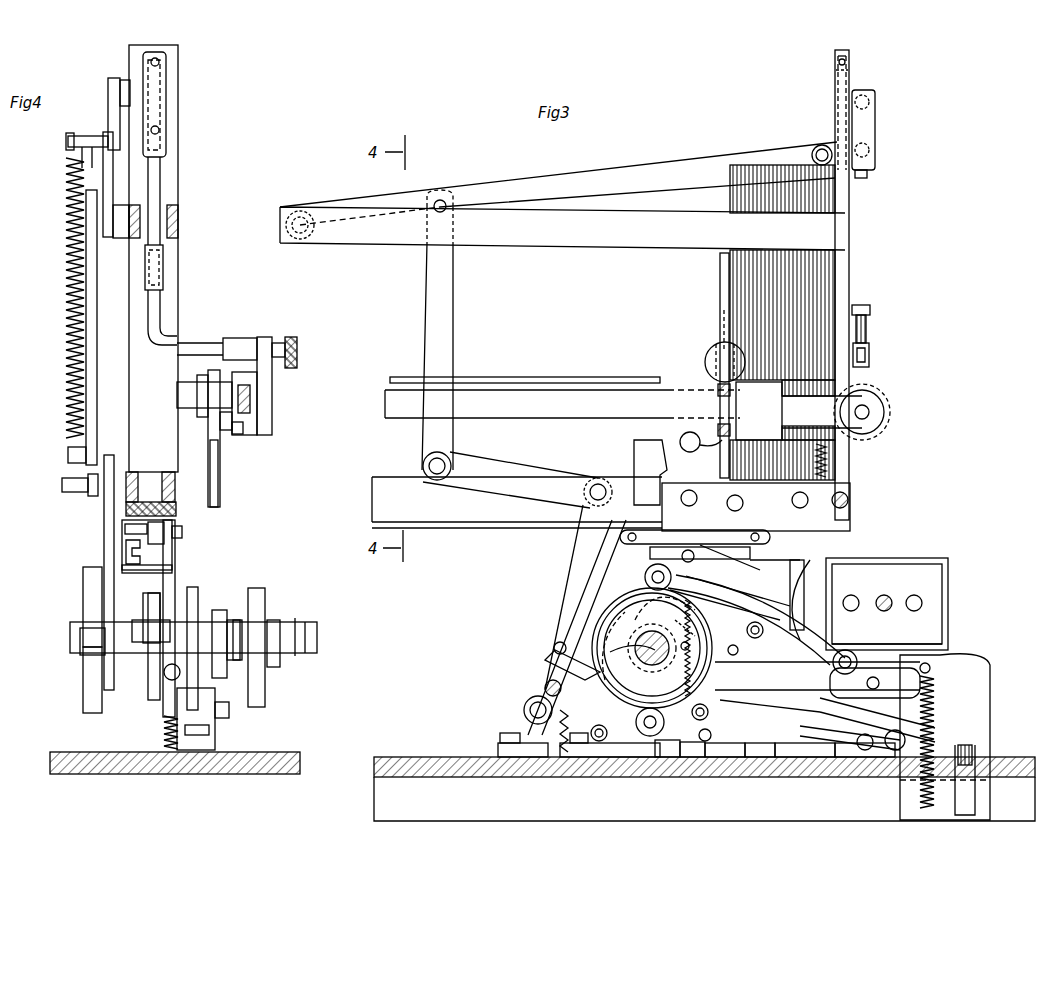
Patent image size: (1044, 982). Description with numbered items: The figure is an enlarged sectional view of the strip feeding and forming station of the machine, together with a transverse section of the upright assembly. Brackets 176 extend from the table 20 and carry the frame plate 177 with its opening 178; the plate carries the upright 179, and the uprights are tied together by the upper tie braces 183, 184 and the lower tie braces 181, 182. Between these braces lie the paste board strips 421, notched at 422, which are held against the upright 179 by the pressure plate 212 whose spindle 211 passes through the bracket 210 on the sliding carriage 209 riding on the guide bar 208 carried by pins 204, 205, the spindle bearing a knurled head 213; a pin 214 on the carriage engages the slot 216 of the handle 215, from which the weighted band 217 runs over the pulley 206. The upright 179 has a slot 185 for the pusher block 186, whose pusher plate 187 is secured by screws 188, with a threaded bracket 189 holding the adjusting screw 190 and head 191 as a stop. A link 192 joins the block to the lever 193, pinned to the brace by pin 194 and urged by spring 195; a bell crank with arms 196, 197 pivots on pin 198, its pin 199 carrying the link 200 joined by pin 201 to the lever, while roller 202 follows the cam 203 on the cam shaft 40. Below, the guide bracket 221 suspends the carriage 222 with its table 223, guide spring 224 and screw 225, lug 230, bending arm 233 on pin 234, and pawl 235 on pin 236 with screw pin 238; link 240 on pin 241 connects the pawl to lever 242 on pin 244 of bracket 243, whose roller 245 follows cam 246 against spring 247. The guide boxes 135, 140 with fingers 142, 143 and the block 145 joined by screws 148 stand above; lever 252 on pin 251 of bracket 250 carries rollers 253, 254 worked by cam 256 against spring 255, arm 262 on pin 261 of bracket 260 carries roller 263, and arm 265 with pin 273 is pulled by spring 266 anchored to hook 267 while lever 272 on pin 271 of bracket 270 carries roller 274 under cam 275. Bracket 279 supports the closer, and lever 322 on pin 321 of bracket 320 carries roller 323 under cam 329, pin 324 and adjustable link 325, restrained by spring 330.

In FIG. 4, the table 20 is at (288, 752).
In FIG. 3, the table 20 is at (395, 757).
In FIG. 4, the cam shaft 40 is at (317, 636).
In FIG. 3, the cam shaft 40 is at (652, 642).
In FIG. 3, the outer guide box 135 is at (948, 630).
In FIG. 3, the inner guide box 140 is at (948, 579).
In FIG. 3, the finger 142 is at (826, 588).
In FIG. 3, the finger 143 is at (850, 594).
In FIG. 3, the block 145 is at (890, 588).
In FIG. 3, the screws 148 is at (922, 600).
In FIG. 3, the bracket 176 is at (814, 762).
In FIG. 3, the frame plate 177 is at (494, 523).
In FIG. 3, the opening 178 is at (850, 516).
In FIG. 4, the upright 179 is at (180, 160).
In FIG. 3, the upright 179 is at (850, 272).
In FIG. 4, the lower tie brace 181 is at (183, 487).
In FIG. 3, the lower tie brace 181 is at (517, 499).
In FIG. 4, the lower tie brace 182 is at (151, 494).
In FIG. 4, the upper tie brace 183 is at (179, 221).
In FIG. 3, the upper tie brace 183 is at (590, 250).
In FIG. 4, the upper tie brace 184 is at (134, 240).
In FIG. 4, the slot 185 is at (161, 186).
In FIG. 3, the pusher block 186 is at (875, 115).
In FIG. 4, the pusher plate 187 is at (166, 101).
In FIG. 3, the pusher plate 187 is at (835, 92).
In FIG. 4, the screws 188 is at (159, 62).
In FIG. 3, the screws 188 is at (850, 68).
In FIG. 3, the threaded bracket 189 is at (869, 350).
In FIG. 3, the adjusting screw 190 is at (866, 322).
In FIG. 3, the head 191 is at (870, 308).
In FIG. 4, the link 192 is at (108, 112).
In FIG. 3, the link 192 is at (875, 140).
In FIG. 4, the lever 193 is at (108, 176).
In FIG. 3, the lever 193 is at (558, 174).
In FIG. 4, the pin 194 is at (120, 212).
In FIG. 3, the pin 194 is at (298, 216).
In FIG. 4, the spring 195 is at (66, 328).
In FIG. 3, the spring 195 is at (830, 470).
In FIG. 3, the bell crank arm 196 is at (556, 472).
In FIG. 4, the bell crank arm 197 is at (104, 514).
In FIG. 3, the bell crank arm 197 is at (575, 540).
In FIG. 4, the pin 198 is at (62, 486).
In FIG. 3, the pin 198 is at (602, 478).
In FIG. 4, the pin 199 is at (68, 456).
In FIG. 3, the pin 199 is at (446, 460).
In FIG. 4, the link 200 is at (92, 392).
In FIG. 3, the link 200 is at (454, 344).
In FIG. 4, the pin 201 is at (75, 190).
In FIG. 3, the pin 201 is at (441, 198).
In FIG. 4, the roller 202 is at (90, 636).
In FIG. 3, the roller 202 is at (548, 652).
In FIG. 4, the cam 203 is at (84, 682).
In FIG. 3, the cam 203 is at (650, 603).
In FIG. 4, the pin 204 is at (186, 410).
In FIG. 3, the pin 204 is at (870, 412).
In FIG. 4, the pin 205 is at (157, 630).
In FIG. 3, the pulley 206 is at (880, 428).
In FIG. 4, the guide bar 208 is at (250, 410).
In FIG. 3, the guide bar 208 is at (562, 404).
In FIG. 4, the sliding carriage 209 is at (240, 435).
In FIG. 3, the sliding carriage 209 is at (680, 377).
In FIG. 4, the bracket 210 is at (271, 400).
In FIG. 3, the bracket 210 is at (737, 406).
In FIG. 4, the spindle 211 is at (222, 338).
In FIG. 3, the spindle 211 is at (716, 355).
In FIG. 4, the pressure plate 212 is at (161, 302).
In FIG. 3, the pressure plate 212 is at (720, 295).
In FIG. 4, the knurled head 213 is at (297, 342).
In FIG. 3, the knurled head 213 is at (722, 384).
In FIG. 4, the pin 214 is at (234, 434).
In FIG. 3, the pin 214 is at (688, 452).
In FIG. 4, the handle 215 is at (220, 490).
In FIG. 3, the handle 215 is at (651, 472).
In FIG. 3, the slot 216 is at (706, 458).
In FIG. 4, the band 217 is at (210, 372).
In FIG. 3, the band 217 is at (850, 440).
In FIG. 4, the guide bracket 221 is at (126, 542).
In FIG. 3, the guide bracket 221 is at (772, 492).
In FIG. 4, the carriage 222 is at (128, 554).
In FIG. 3, the carriage 222 is at (765, 498).
In FIG. 4, the table 223 is at (176, 576).
In FIG. 3, the guide spring 224 is at (738, 591).
In FIG. 3, the screw 225 is at (725, 599).
In FIG. 3, the lug 230 is at (786, 595).
In FIG. 3, the bending arm 233 is at (766, 555).
In FIG. 3, the pin 234 is at (728, 555).
In FIG. 4, the pawl 235 is at (140, 528).
In FIG. 3, the pawl 235 is at (693, 553).
In FIG. 3, the pin 236 is at (658, 562).
In FIG. 3, the screw pin 238 is at (747, 495).
In FIG. 4, the link 240 is at (183, 534).
In FIG. 3, the link 240 is at (695, 537).
In FIG. 3, the pin 241 is at (656, 500).
In FIG. 4, the lever 242 is at (176, 551).
In FIG. 3, the lever 242 is at (590, 586).
In FIG. 4, the bracket 243 is at (196, 719).
In FIG. 3, the bracket 243 is at (522, 762).
In FIG. 4, the pin 244 is at (229, 712).
In FIG. 3, the pin 244 is at (524, 708).
In FIG. 3, the roller 245 is at (560, 640).
In FIG. 4, the cam 246 is at (148, 686).
In FIG. 3, the cam 246 is at (652, 648).
In FIG. 4, the spring 247 is at (164, 738).
In FIG. 3, the spring 247 is at (575, 728).
In FIG. 3, the bracket 250 is at (817, 647).
In FIG. 3, the pin 251 is at (768, 699).
In FIG. 3, the lever 252 is at (749, 653).
In FIG. 3, the roller 253 is at (858, 664).
In FIG. 3, the roller 254 is at (645, 576).
In FIG. 3, the spring 255 is at (678, 638).
In FIG. 4, the cam 256 is at (199, 604).
In FIG. 3, the cam 256 is at (625, 641).
In FIG. 3, the bracket 260 is at (866, 762).
In FIG. 3, the pin 261 is at (905, 740).
In FIG. 3, the arm 262 is at (876, 717).
In FIG. 3, the roller 263 is at (767, 622).
In FIG. 3, the arm 265 is at (930, 668).
In FIG. 3, the spring 266 is at (934, 706).
In FIG. 3, the hook 267 is at (962, 806).
In FIG. 3, the bracket 270 is at (625, 762).
In FIG. 3, the pin 271 is at (598, 744).
In FIG. 3, the lever 272 is at (731, 706).
In FIG. 3, the pin 273 is at (857, 740).
In FIG. 3, the roller 274 is at (642, 722).
In FIG. 4, the cam 275 is at (265, 592).
In FIG. 3, the cam 275 is at (727, 621).
In FIG. 3, the bracket 279 is at (990, 728).
In FIG. 3, the bracket 320 is at (716, 762).
In FIG. 3, the pin 321 is at (704, 747).
In FIG. 3, the lever 322 is at (720, 722).
In FIG. 3, the roller 323 is at (690, 621).
In FIG. 3, the pin 324 is at (675, 648).
In FIG. 3, the adjustable link 325 is at (752, 762).
In FIG. 4, the cam 329 is at (220, 672).
In FIG. 3, the cam 329 is at (548, 680).
In FIG. 3, the spring 330 is at (666, 762).
In FIG. 3, the paste board strips 421 is at (730, 200).
In FIG. 3, the notches 422 is at (730, 266).